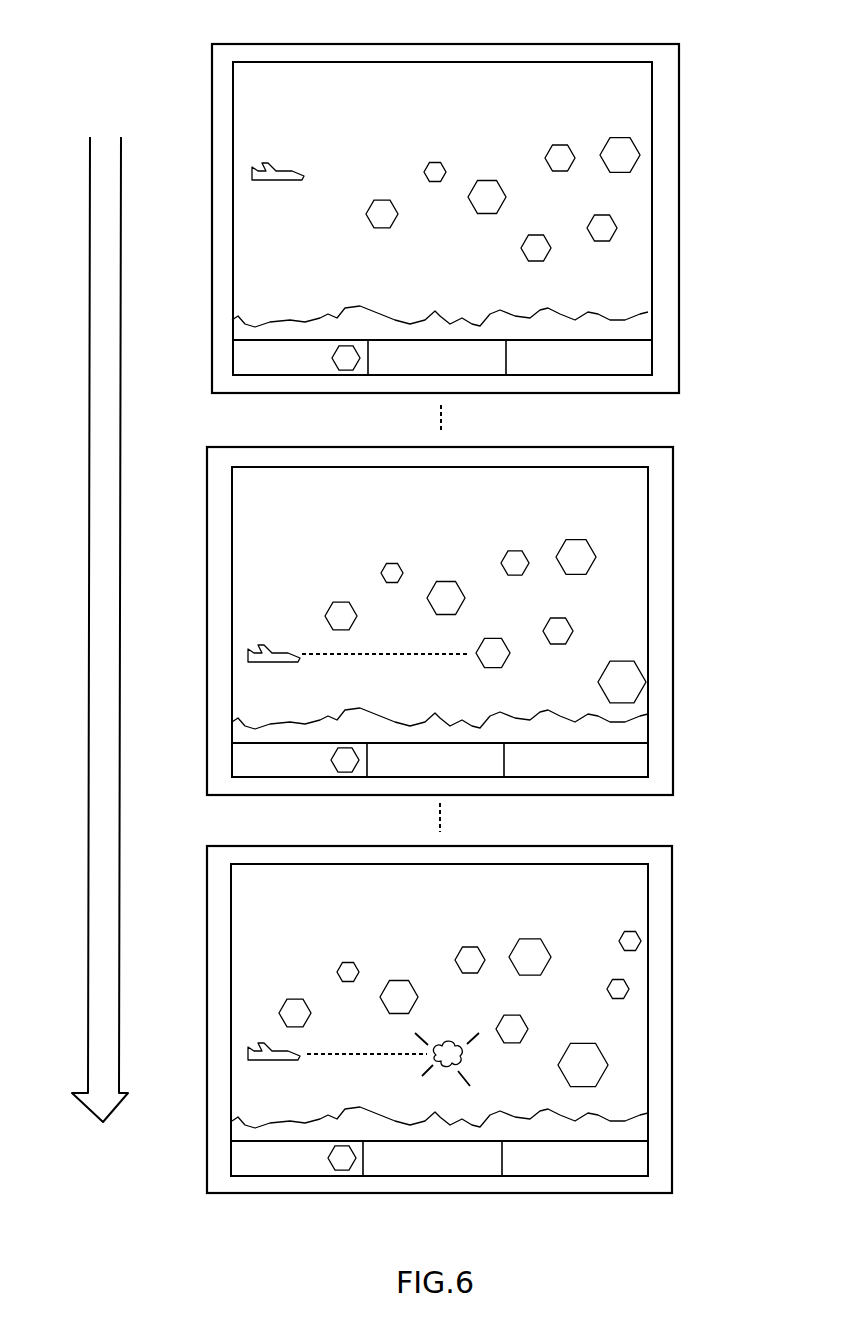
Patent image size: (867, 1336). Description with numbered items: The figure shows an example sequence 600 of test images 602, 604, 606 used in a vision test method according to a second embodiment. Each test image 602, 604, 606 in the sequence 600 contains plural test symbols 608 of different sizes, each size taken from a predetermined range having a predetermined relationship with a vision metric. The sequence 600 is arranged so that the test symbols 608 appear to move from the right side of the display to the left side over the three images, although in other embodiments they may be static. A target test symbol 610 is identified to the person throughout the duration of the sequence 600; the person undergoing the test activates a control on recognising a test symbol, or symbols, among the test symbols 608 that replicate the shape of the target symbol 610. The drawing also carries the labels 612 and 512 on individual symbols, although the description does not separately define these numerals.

The sequence of test images 600 is at (116, 82).
The test image 602 is at (705, 136).
The test image 604 is at (685, 550).
The test image 606 is at (685, 982).
The test symbols 608 is at (398, 156).
The target test symbol 610 is at (333, 378).
The target letter game element 612 is at (520, 262).
The letter game element 512 is at (624, 936).